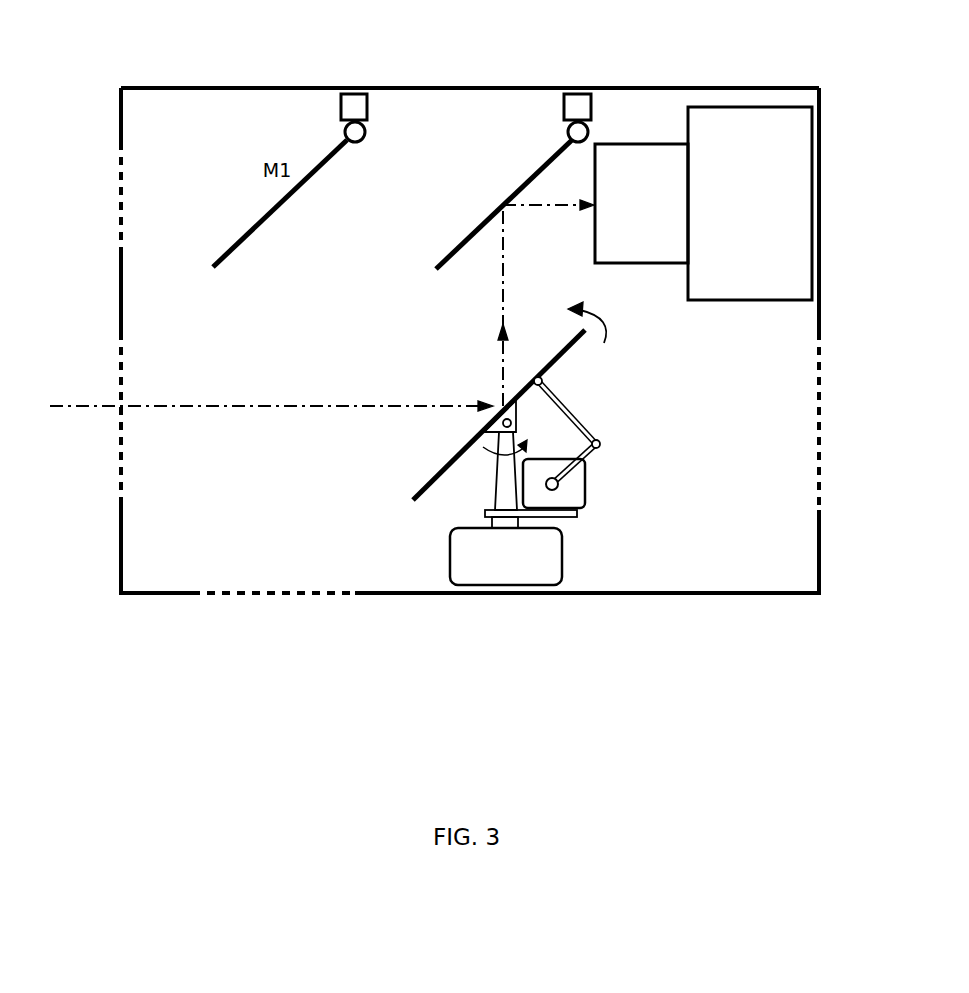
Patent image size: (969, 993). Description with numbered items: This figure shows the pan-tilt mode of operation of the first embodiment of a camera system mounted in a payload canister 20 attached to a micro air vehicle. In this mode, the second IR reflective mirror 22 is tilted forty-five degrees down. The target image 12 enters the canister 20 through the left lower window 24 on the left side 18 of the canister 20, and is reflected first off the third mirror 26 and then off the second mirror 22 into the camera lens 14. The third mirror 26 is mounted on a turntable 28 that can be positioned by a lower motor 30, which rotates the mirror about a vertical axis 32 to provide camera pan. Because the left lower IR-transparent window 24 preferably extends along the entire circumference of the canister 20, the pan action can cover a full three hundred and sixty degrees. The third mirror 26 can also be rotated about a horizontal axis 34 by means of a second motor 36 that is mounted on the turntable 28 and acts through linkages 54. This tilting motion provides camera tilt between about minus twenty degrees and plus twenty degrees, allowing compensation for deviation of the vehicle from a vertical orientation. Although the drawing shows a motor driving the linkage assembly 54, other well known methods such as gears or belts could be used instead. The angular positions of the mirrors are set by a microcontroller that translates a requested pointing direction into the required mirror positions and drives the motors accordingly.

The target image 12 is at (70, 406).
The camera lens 14 is at (643, 167).
The left side 18 is at (120, 558).
The payload canister 20 is at (820, 248).
The IR reflective mirror M2 22 is at (477, 224).
The left lower window 24 is at (120, 460).
The mirror M3 26 is at (573, 352).
The turntable 28 is at (500, 493).
The lower motor 30 is at (522, 557).
The vertical axis 32 is at (505, 488).
The horizontal axis 34 is at (605, 318).
The second motor 36 is at (572, 487).
The linkages 54 is at (583, 422).